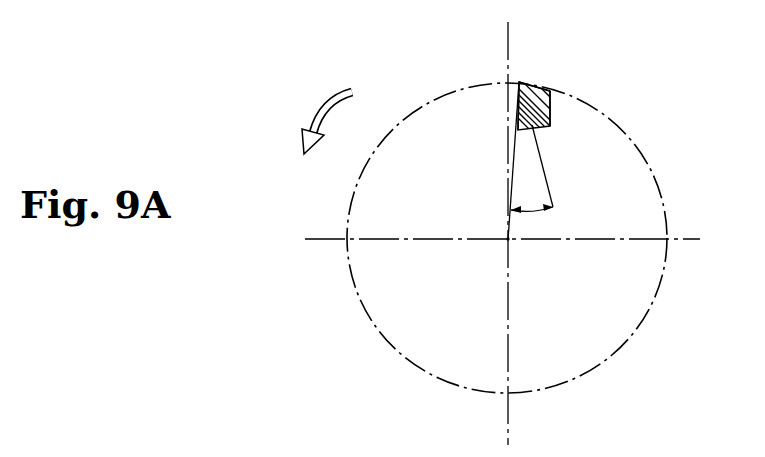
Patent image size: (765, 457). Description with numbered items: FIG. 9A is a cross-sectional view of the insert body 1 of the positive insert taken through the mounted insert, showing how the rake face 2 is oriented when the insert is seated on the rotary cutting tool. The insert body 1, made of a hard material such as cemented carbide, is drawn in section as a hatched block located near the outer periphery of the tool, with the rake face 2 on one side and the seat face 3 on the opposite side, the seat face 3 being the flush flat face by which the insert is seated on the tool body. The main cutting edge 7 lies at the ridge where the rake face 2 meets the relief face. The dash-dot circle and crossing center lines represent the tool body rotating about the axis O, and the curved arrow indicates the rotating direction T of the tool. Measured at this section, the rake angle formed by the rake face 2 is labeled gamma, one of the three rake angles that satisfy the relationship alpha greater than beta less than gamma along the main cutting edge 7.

The insert body 1 is at (606, 40).
The rake face 2 is at (517, 106).
The seat face 3 is at (600, 165).
The main cutting edge 7 is at (547, 42).
The axis O is at (585, 300).
The rotating direction T is at (321, 123).